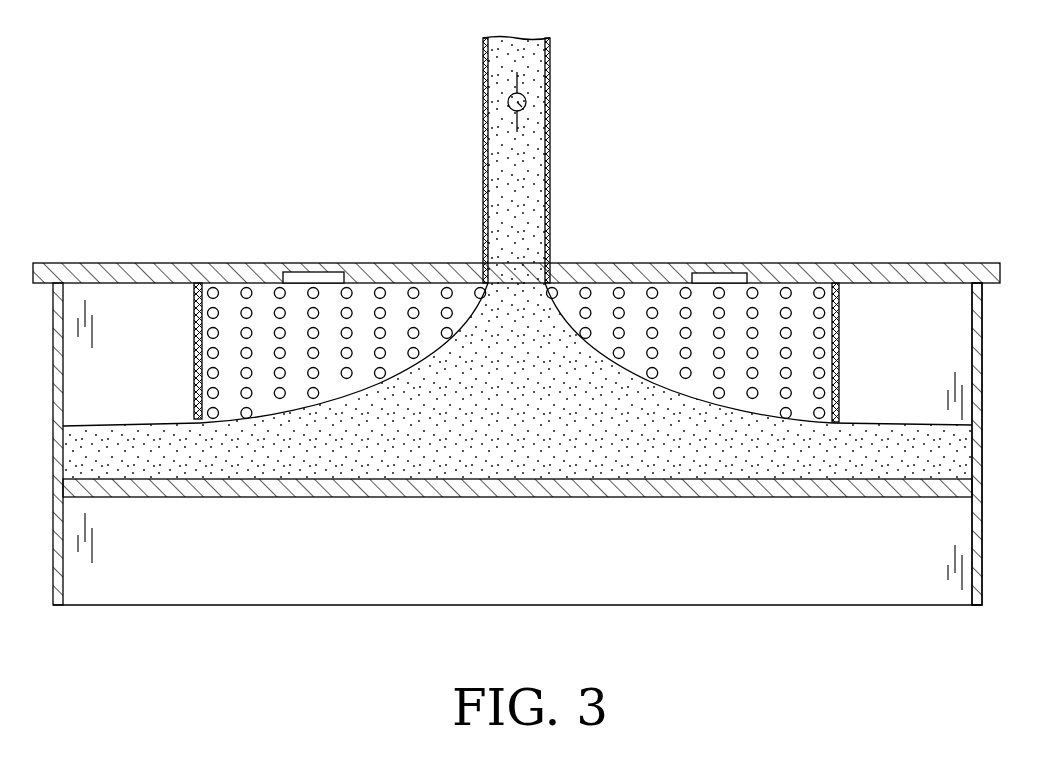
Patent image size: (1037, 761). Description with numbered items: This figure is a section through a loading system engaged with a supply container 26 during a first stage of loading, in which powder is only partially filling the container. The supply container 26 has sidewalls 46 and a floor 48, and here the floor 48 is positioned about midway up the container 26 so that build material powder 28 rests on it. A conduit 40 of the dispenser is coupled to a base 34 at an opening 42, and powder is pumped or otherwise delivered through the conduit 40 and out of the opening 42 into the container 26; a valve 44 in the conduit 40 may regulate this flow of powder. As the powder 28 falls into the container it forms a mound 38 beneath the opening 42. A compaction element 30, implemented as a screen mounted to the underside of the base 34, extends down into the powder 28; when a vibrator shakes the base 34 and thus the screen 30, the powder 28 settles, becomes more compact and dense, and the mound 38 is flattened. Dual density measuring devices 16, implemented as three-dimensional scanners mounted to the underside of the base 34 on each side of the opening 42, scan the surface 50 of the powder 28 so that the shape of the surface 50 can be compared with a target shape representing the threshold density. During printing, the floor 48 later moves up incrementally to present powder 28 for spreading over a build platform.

The density measuring device 16 is at (314, 278).
The supply container 26 is at (980, 517).
The build material powder 28 is at (533, 173).
The compaction element 30 is at (839, 322).
The base 34 is at (800, 278).
The mound 38 is at (548, 317).
The conduit 40 is at (484, 103).
The opening 42 is at (500, 268).
The valve 44 is at (524, 104).
The sidewalls 46 is at (948, 348).
The floor 48 is at (535, 483).
The surface 50 is at (232, 420).